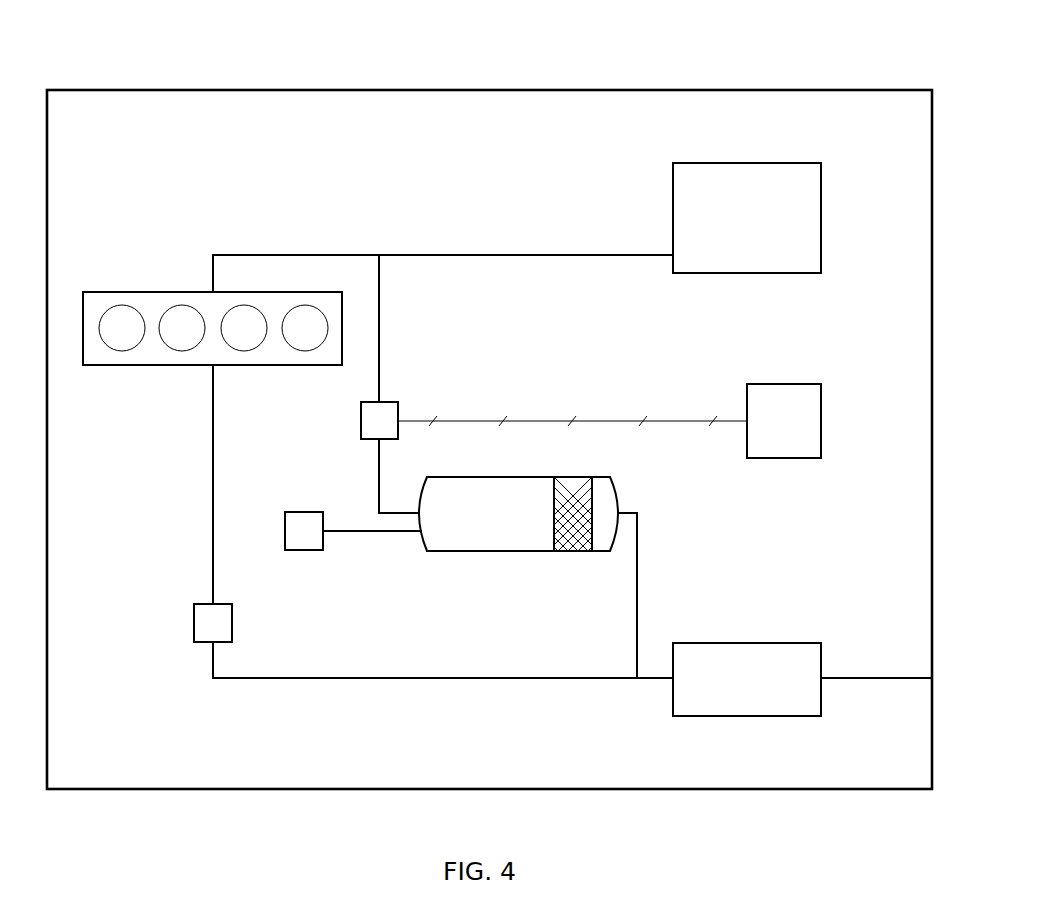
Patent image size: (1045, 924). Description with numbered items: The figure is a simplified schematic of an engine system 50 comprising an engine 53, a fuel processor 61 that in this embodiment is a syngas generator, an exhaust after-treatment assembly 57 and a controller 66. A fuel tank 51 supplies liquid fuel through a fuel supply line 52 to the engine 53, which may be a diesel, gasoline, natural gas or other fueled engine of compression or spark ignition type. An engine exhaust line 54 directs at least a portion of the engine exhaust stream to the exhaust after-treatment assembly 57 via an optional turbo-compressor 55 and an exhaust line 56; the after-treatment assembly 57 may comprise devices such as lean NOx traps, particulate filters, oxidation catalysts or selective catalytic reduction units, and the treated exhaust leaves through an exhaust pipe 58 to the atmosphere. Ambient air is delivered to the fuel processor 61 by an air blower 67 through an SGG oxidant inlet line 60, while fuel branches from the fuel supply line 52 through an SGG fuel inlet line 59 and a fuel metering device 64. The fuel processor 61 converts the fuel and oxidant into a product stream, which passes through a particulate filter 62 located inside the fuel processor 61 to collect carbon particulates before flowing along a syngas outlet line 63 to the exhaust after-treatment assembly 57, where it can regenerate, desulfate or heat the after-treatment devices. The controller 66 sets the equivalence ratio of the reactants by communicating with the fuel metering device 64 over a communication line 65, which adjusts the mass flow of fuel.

The engine system 50 is at (829, 89).
The fuel tank 51 is at (773, 162).
The fuel supply line 52 is at (275, 254).
The engine 53 is at (140, 291).
The engine exhaust line 54 is at (212, 420).
The turbo-compressor 55 is at (193, 618).
The exhaust line 56 is at (415, 685).
The exhaust after-treatment assembly 57 is at (708, 717).
The exhaust pipe 58 is at (912, 680).
The SGG fuel inlet line 59 is at (379, 346).
The SGG oxidant inlet line 60 is at (400, 532).
The fuel processor 61 is at (527, 552).
The particulate filter 62 is at (570, 476).
The syngas outlet line 63 is at (637, 605).
The fuel metering device 64 is at (398, 412).
The communication line 65 is at (555, 420).
The controller 66 is at (793, 384).
The air blower 67 is at (310, 550).